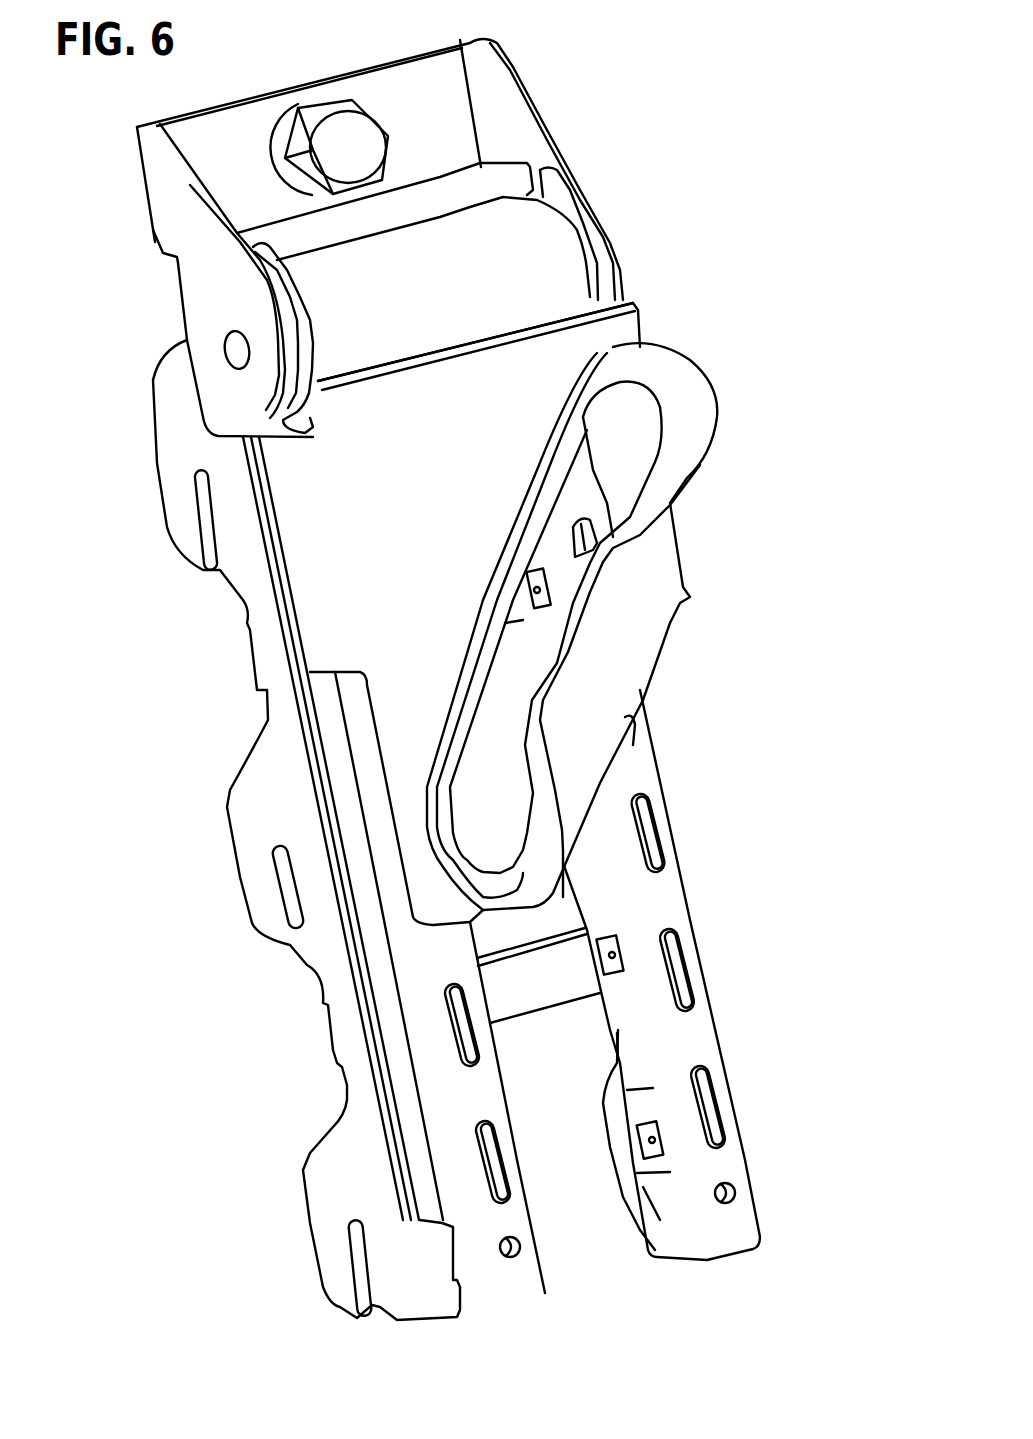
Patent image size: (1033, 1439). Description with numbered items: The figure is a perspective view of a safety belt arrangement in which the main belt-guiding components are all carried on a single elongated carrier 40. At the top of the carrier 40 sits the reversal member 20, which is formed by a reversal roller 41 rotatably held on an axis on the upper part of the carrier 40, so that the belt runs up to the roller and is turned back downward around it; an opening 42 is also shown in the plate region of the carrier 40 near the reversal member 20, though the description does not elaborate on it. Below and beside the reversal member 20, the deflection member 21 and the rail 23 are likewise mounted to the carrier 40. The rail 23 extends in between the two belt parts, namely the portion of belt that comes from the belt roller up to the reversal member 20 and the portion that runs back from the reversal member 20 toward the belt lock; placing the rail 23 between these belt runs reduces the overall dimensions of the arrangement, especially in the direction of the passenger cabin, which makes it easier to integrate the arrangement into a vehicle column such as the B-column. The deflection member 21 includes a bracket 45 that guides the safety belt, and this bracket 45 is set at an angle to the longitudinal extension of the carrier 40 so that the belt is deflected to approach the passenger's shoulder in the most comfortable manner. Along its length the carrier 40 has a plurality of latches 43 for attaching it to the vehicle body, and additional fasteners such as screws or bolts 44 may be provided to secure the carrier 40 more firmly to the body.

The reversal member 20 is at (552, 289).
The deflection member 21 is at (635, 600).
The rail 23 is at (642, 905).
The carrier 40 is at (222, 600).
The reversal roller 41 is at (513, 257).
The hole 42 is at (226, 348).
The latches 43 is at (185, 525).
The bolts 44 is at (300, 135).
The bracket 45 is at (680, 380).